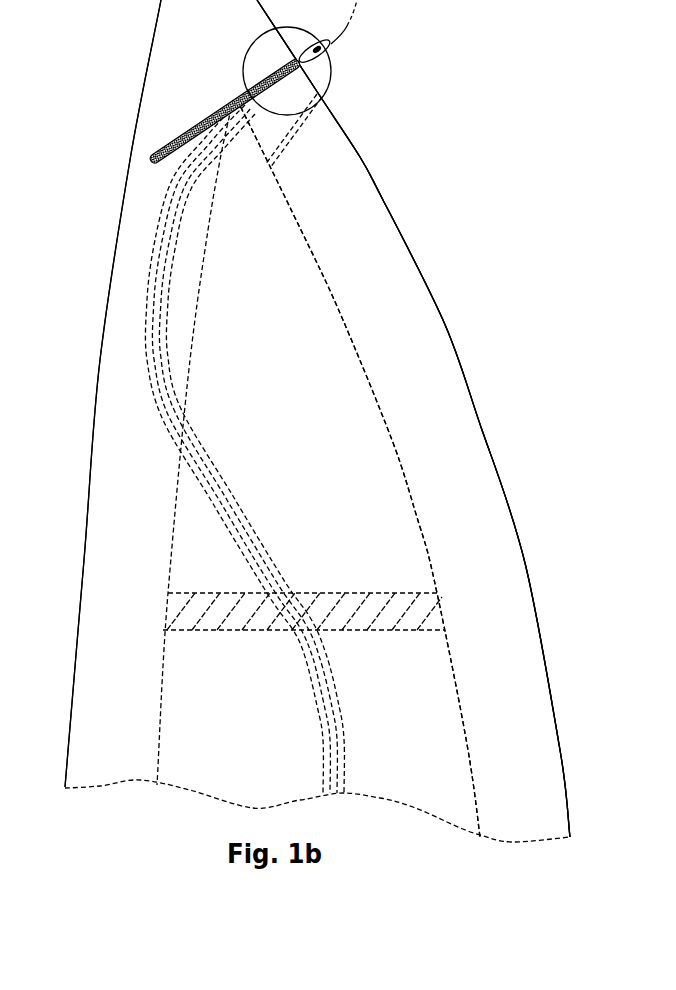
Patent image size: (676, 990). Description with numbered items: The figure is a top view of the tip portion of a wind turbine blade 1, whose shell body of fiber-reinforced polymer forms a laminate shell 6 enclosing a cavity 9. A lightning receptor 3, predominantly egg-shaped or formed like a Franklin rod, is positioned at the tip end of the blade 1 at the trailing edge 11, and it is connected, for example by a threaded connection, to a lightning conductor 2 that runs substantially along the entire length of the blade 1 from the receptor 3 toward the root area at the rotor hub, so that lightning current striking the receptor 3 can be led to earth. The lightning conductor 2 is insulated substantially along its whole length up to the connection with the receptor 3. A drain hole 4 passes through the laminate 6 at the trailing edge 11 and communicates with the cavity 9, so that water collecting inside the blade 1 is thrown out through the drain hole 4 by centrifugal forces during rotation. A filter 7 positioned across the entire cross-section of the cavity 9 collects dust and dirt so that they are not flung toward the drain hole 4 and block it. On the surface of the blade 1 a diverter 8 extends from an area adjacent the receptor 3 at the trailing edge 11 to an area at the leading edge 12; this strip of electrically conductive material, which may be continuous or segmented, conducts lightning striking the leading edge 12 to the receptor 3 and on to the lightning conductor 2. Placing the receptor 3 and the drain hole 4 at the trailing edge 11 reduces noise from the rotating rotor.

The blade 1 is at (448, 82).
The lightning conductor 2 is at (155, 282).
The lightning receptor 3 is at (331, 45).
The drain hole 4 is at (297, 133).
The laminate shell 6 is at (473, 407).
The filter 7 is at (423, 608).
The diverter 8 is at (200, 121).
The cavity 9 is at (307, 310).
The trailing edge 11 is at (447, 331).
The leading edge 12 is at (123, 205).